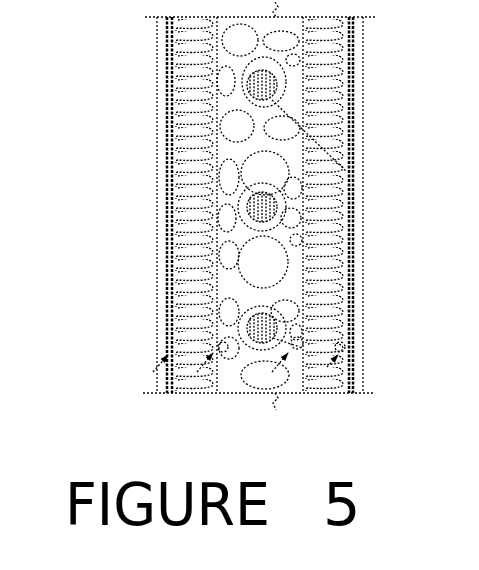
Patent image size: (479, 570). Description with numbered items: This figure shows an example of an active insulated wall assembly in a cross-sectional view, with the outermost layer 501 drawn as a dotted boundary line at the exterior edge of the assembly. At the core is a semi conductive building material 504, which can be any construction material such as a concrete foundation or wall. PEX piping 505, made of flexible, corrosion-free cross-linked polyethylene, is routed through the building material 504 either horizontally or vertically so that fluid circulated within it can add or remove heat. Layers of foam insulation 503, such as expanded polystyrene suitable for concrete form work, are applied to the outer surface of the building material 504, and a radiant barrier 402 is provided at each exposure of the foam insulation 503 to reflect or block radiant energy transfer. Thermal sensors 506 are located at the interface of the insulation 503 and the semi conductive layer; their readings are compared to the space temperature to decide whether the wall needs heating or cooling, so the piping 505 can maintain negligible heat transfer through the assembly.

The exterior cladding layer 501 is at (155, 82).
The radiant barrier 402 is at (240, 98).
The foam insulation 503 is at (176, 212).
The semi conductive building material 504 is at (230, 230).
The PEX piping 505 is at (237, 282).
The thermal sensors 506 is at (375, 372).